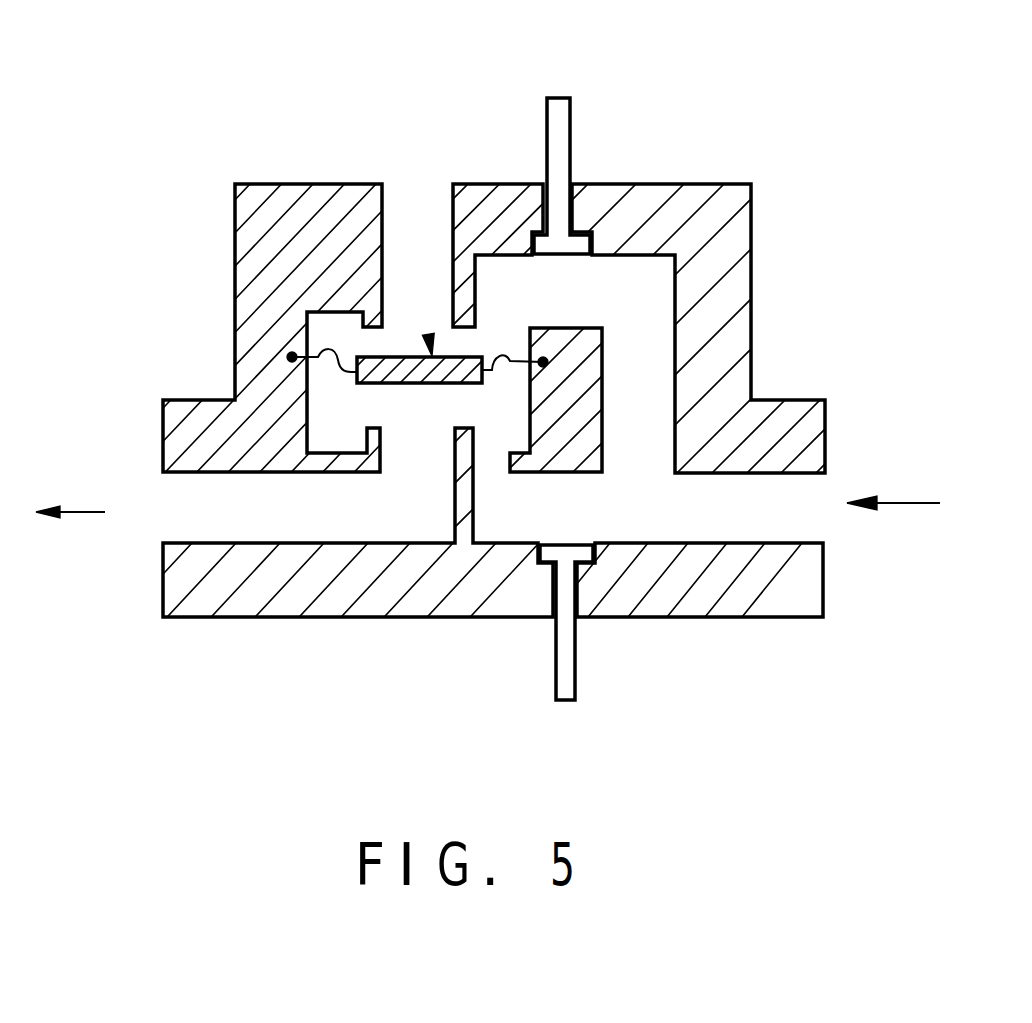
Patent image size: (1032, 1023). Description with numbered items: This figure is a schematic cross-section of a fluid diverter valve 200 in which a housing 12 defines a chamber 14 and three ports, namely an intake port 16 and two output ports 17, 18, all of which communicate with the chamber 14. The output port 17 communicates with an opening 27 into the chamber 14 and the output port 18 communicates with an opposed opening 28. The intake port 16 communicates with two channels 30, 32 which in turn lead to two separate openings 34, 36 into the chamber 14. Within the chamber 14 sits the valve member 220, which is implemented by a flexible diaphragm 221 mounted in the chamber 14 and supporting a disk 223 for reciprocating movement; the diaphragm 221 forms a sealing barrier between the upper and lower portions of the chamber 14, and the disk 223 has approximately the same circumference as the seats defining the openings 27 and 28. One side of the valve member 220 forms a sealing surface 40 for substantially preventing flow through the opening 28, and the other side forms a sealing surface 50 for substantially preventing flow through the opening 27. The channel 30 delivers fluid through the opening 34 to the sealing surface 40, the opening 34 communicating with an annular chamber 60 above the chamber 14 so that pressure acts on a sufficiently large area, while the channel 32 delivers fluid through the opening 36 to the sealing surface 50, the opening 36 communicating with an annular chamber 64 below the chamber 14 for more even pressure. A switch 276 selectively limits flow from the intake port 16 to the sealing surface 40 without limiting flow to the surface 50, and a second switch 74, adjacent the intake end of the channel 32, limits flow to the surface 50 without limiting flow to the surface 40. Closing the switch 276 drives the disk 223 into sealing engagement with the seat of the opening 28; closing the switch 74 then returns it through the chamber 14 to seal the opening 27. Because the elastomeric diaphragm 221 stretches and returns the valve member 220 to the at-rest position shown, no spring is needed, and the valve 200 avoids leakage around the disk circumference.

The housing 12 is at (230, 180).
The chamber 14 is at (323, 397).
The intake port 16 is at (820, 520).
The output port 17 is at (168, 523).
The output port 18 is at (423, 192).
The opening 27 is at (410, 460).
The opening 28 is at (440, 323).
The channel 30 is at (618, 308).
The channel 32 is at (567, 521).
The opening 34 is at (500, 333).
The opening 36 is at (502, 460).
The sealing surface 40 is at (369, 238).
The sealing surface 50 is at (452, 386).
The annular chamber 60 is at (335, 320).
The annular chamber 64 is at (320, 430).
The second switch 74 is at (567, 687).
The valve 200 is at (788, 175).
The valve member 220 is at (368, 355).
The flexible diaphragm 221 is at (320, 372).
The disk 223 is at (380, 186).
The switch 276 is at (555, 112).